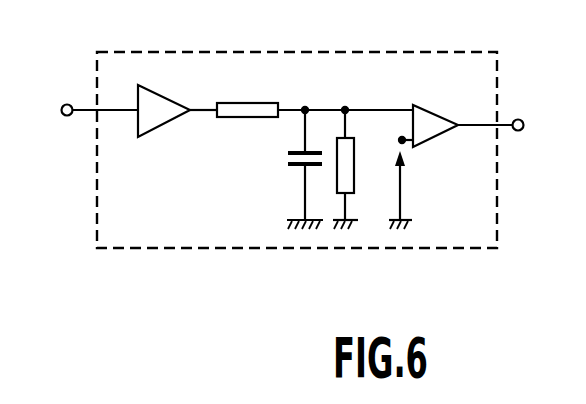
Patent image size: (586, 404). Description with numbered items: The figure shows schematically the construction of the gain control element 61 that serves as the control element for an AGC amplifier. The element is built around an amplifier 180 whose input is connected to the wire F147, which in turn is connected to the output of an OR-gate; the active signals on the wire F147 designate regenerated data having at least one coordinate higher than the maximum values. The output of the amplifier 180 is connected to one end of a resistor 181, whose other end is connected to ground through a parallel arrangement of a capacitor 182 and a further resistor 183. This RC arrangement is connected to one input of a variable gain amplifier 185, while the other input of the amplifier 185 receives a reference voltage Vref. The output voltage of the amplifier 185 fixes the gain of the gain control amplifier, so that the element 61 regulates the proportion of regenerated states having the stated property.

The gain control element 61 is at (205, 228).
The wire F147 is at (81, 87).
The amplifier 180 is at (157, 108).
The resistor 181 is at (248, 117).
The capacitor 182 is at (286, 157).
The further resistor 183 is at (333, 140).
The variable gain amplifier 185 is at (450, 107).
The reference voltage Vref is at (432, 183).